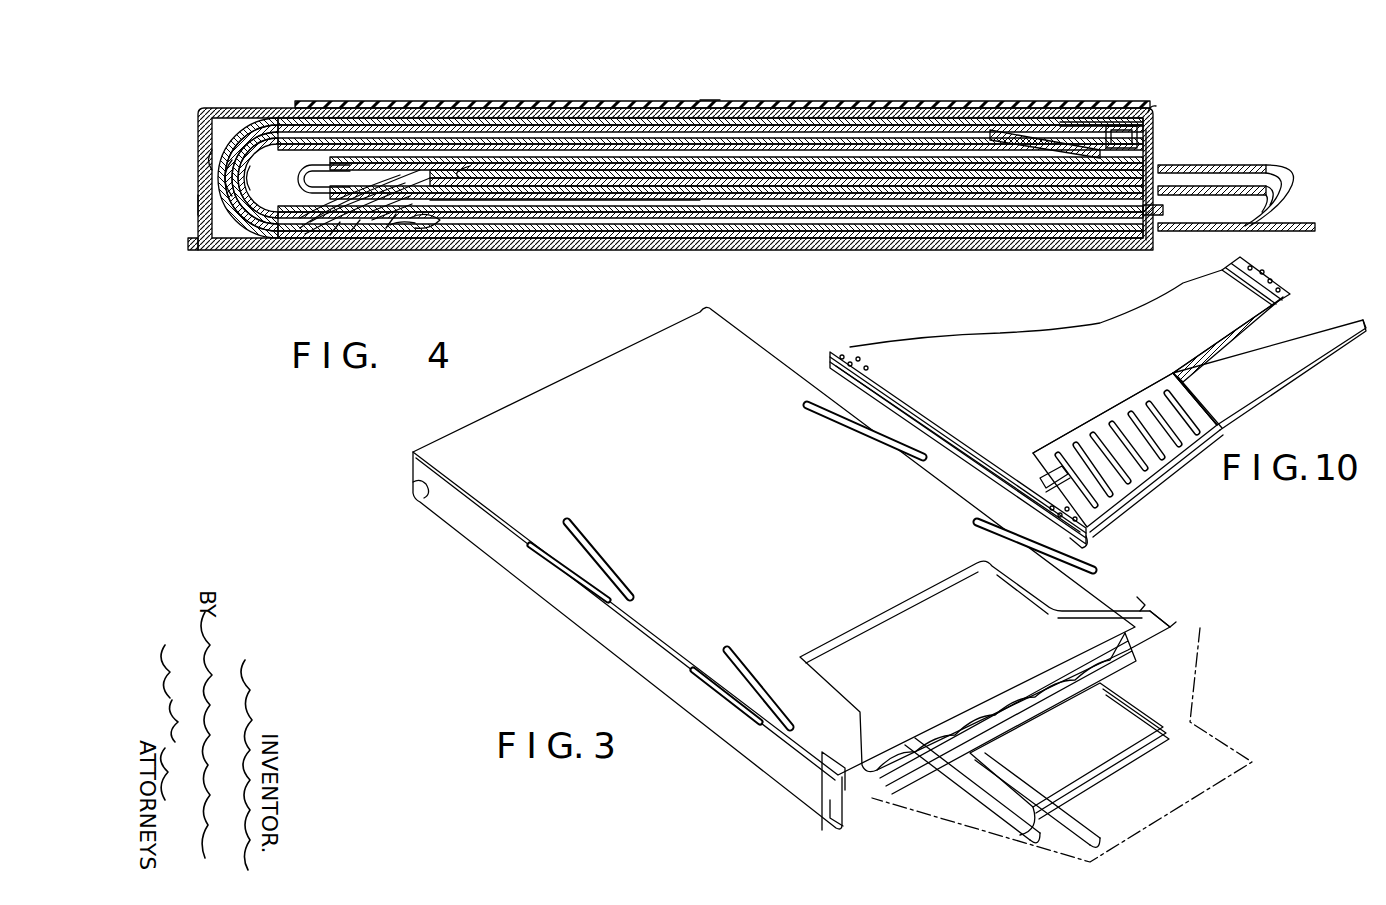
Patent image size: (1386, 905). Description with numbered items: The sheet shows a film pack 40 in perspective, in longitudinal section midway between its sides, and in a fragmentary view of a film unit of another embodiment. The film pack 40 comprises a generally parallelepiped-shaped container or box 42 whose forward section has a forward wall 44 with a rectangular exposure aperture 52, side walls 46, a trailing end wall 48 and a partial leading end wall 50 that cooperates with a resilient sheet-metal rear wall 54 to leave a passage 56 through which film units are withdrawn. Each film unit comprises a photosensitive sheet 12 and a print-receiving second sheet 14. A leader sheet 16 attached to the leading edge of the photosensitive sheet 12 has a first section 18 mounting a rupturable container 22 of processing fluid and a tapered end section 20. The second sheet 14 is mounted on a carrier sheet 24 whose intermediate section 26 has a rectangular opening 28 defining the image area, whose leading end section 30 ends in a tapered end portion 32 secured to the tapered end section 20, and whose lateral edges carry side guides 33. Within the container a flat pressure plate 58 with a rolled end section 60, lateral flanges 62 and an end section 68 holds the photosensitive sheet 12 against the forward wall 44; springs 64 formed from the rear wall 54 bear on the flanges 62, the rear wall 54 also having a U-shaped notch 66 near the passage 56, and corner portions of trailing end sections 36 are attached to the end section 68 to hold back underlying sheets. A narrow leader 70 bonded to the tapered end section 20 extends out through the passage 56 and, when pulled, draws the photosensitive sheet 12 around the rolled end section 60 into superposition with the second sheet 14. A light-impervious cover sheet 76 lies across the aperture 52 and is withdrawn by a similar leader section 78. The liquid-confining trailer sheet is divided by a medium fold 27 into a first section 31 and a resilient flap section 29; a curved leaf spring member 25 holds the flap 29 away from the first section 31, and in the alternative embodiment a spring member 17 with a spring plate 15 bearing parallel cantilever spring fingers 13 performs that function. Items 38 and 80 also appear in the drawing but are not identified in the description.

In FIG. 4, the photosensitive sheet 12 is at (404, 130).
In FIG. 10, the spring fingers 13 is at (1150, 452).
In FIG. 4, the second or print-receiving sheet 14 is at (608, 232).
In FIG. 10, the second or print-receiving sheet 14 is at (940, 355).
In FIG. 10, the spring plate 15 is at (1120, 490).
In FIG. 4, the leader sheet 16 is at (272, 240).
In FIG. 10, the spring member 17 is at (1212, 438).
In FIG. 4, the first section 18 is at (190, 165).
In FIG. 4, the tapered end section 20 is at (760, 150).
In FIG. 4, the rupturable container 22 is at (325, 236).
In FIG. 4, the carrier sheet 24 is at (468, 165).
In FIG. 10, the carrier sheet 24 is at (920, 412).
In FIG. 4, the leaf spring member 25 is at (384, 226).
In FIG. 4, the intermediate section 26 is at (558, 175).
In FIG. 4, the medium fold 27 is at (338, 238).
In FIG. 4, the rectangular opening 28 is at (498, 232).
In FIG. 10, the rectangular opening 28 is at (888, 358).
In FIG. 4, the second resilient flap section 29 is at (420, 230).
In FIG. 10, the second resilient flap section 29 is at (1280, 350).
In FIG. 4, the leading end section 30 is at (930, 198).
In FIG. 4, the first section 31 is at (395, 230).
In FIG. 10, the first section 31 is at (1082, 518).
In FIG. 4, the tapered end portion 32 is at (662, 228).
In FIG. 10, the side guides 33 is at (846, 345).
In FIG. 4, the trailing end sections 36 is at (1102, 128).
In FIG. 10, the locating tab 38 is at (1048, 478).
In FIG. 4, the film pack 40 is at (702, 99).
In FIG. 4, the container or box 42 is at (1154, 112).
In FIG. 3, the container or box 42 is at (1152, 599).
In FIG. 4, the forward wall 44 is at (1062, 124).
In FIG. 3, the forward wall 44 is at (1168, 614).
In FIG. 4, the side walls 46 is at (230, 130).
In FIG. 3, the side walls 46 is at (606, 628).
In FIG. 4, the trailing end wall 48 is at (198, 203).
In FIG. 4, the leading end wall 50 is at (1156, 145).
In FIG. 3, the leading end wall 50 is at (864, 802).
In FIG. 4, the exposure aperture 52 is at (302, 108).
In FIG. 4, the rear wall 54 is at (582, 250).
In FIG. 3, the rear wall 54 is at (764, 530).
In FIG. 4, the passage 56 is at (1160, 210).
In FIG. 3, the passage 56 is at (1175, 637).
In FIG. 4, the pressure plate 58 is at (366, 148).
In FIG. 4, the rolled end section 60 is at (248, 180).
In FIG. 4, the lateral flanges 62 is at (318, 190).
In FIG. 3, the springs 64 is at (582, 578).
In FIG. 4, the U-shaped opening or enlarged notch 66 is at (870, 246).
In FIG. 3, the U-shaped opening or enlarged notch 66 is at (995, 562).
In FIG. 4, the end section 68 is at (1015, 152).
In FIG. 4, the leader 70 is at (1208, 188).
In FIG. 3, the leader 70 is at (952, 796).
In FIG. 4, the cover sheet 76 is at (855, 118).
In FIG. 4, the leader section 78 is at (1290, 232).
In FIG. 3, the leader section 78 is at (1222, 728).
In FIG. 4, the loop 80 is at (1284, 206).
In FIG. 3, the loop 80 is at (1000, 795).